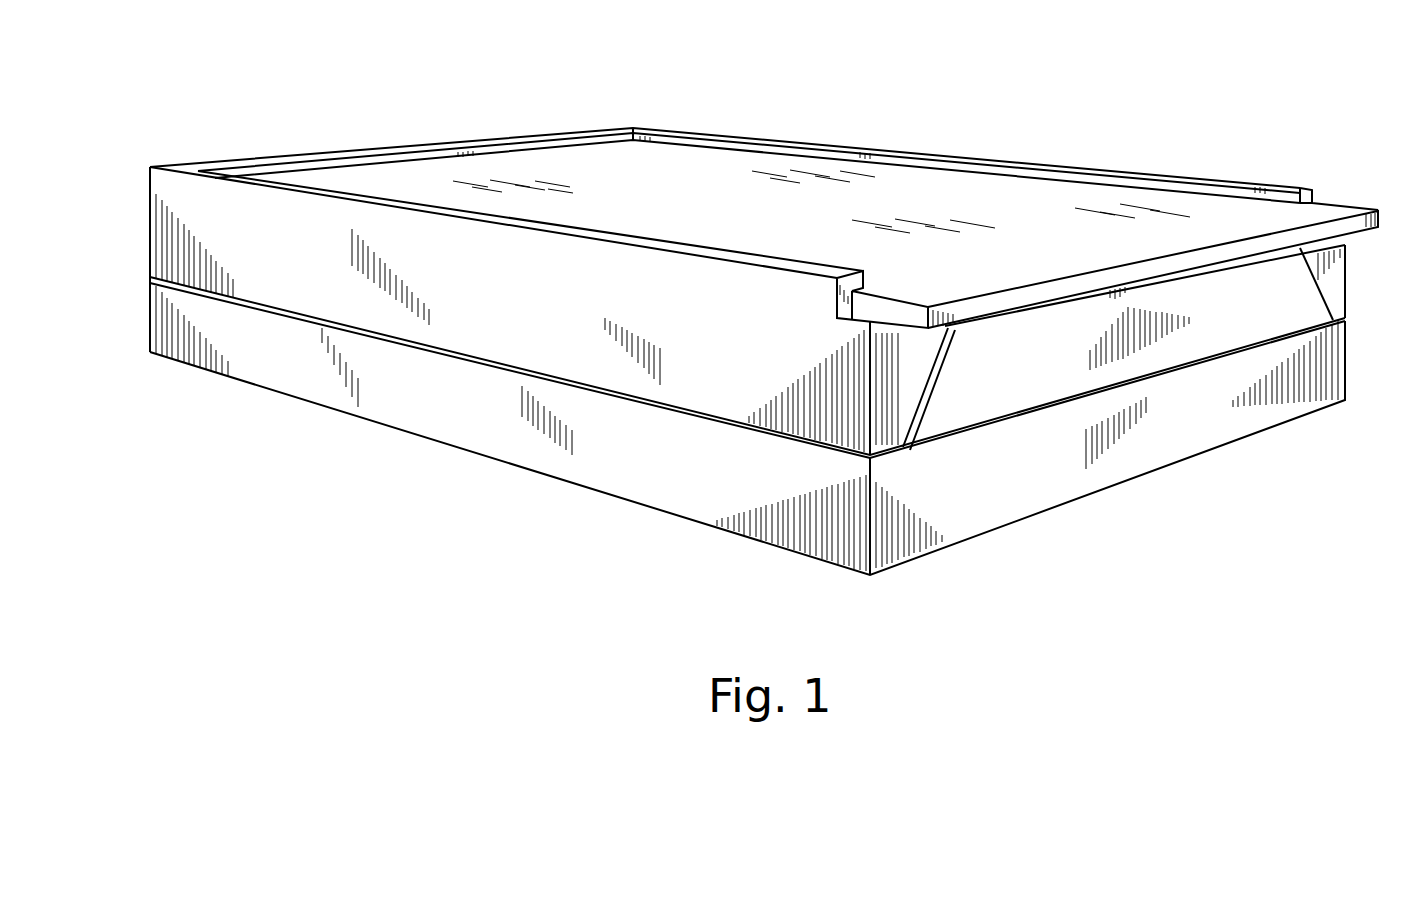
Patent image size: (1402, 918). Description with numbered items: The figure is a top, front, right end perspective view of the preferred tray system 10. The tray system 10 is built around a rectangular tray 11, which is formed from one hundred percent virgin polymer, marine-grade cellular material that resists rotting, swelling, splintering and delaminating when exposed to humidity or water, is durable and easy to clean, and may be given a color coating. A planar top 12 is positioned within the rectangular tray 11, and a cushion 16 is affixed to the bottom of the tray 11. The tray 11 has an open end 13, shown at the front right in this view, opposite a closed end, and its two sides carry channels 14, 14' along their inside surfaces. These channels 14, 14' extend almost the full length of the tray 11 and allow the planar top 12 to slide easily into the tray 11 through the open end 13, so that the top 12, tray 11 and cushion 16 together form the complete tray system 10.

The tray system 10 is at (403, 95).
The rectangular tray 11 is at (178, 187).
The planar top 12 is at (715, 204).
The open end 13 is at (1108, 265).
The channel 14 is at (882, 288).
The channel 14' is at (1307, 209).
The cushion 16 is at (262, 372).